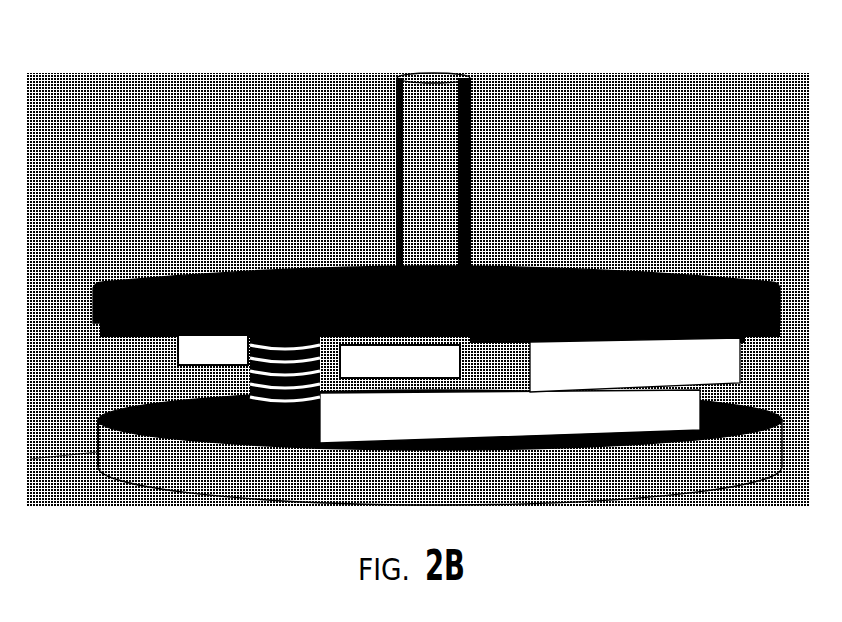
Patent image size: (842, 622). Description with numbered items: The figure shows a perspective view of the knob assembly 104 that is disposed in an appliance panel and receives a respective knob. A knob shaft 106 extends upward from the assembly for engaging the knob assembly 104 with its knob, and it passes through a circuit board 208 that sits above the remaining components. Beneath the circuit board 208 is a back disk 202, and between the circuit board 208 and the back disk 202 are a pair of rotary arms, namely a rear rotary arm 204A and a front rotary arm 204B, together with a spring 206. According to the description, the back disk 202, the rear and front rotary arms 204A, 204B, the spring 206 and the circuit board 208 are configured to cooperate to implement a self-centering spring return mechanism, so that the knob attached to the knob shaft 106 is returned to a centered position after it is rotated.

The knob assembly 104 is at (440, 56).
The knob shaft 106 is at (448, 183).
The circuit board 208 is at (523, 268).
The back disk 202 is at (440, 482).
The rear rotary arm 204A is at (703, 448).
The front rotary arm 204B is at (723, 360).
The spring 206 is at (100, 427).